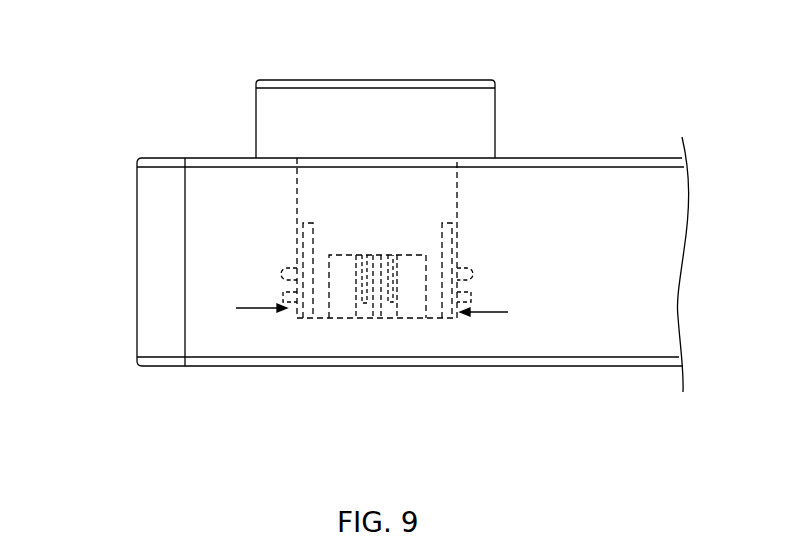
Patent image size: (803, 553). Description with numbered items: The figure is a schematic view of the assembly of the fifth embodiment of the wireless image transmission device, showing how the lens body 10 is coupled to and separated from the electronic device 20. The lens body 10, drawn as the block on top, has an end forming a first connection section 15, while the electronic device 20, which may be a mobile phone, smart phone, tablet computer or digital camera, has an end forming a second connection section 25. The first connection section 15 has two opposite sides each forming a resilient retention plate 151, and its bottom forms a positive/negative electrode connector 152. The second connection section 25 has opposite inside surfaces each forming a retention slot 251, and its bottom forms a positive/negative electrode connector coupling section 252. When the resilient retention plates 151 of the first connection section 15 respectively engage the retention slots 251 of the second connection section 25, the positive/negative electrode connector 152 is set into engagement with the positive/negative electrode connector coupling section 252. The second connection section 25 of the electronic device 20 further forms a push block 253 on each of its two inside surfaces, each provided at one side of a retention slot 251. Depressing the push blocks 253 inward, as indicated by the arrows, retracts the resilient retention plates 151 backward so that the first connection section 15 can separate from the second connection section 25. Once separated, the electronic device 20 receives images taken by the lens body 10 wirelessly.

The lens body 10 is at (300, 115).
The electronic device 20 is at (654, 204).
The second connection section 25 is at (41, 162).
The retention slot 251 is at (310, 272).
The positive/negative electrode connector coupling section 252 is at (377, 250).
The push block 253 is at (283, 295).
The first connection section 15 is at (445, 452).
The resilient retention plate 151 is at (470, 272).
The positive/negative electrode connector 152 is at (364, 262).